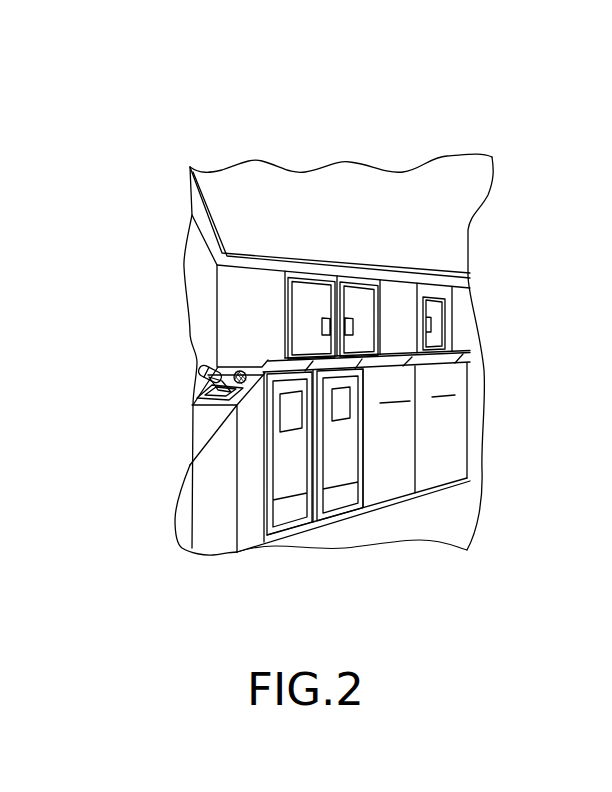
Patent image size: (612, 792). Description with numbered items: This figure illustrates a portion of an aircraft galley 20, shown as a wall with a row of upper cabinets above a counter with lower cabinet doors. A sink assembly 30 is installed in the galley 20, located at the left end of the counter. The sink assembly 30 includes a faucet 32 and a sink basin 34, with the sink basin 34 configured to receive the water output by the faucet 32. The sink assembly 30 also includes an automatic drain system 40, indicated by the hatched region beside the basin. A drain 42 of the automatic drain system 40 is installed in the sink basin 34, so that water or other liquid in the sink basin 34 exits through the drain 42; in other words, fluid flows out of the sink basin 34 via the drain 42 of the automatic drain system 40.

The galley 20 is at (208, 113).
The sink assembly 30 is at (207, 323).
The faucet 32 is at (205, 367).
The sink basin 34 is at (210, 389).
The automatic drain system 40 is at (240, 373).
The drain 42 is at (208, 394).